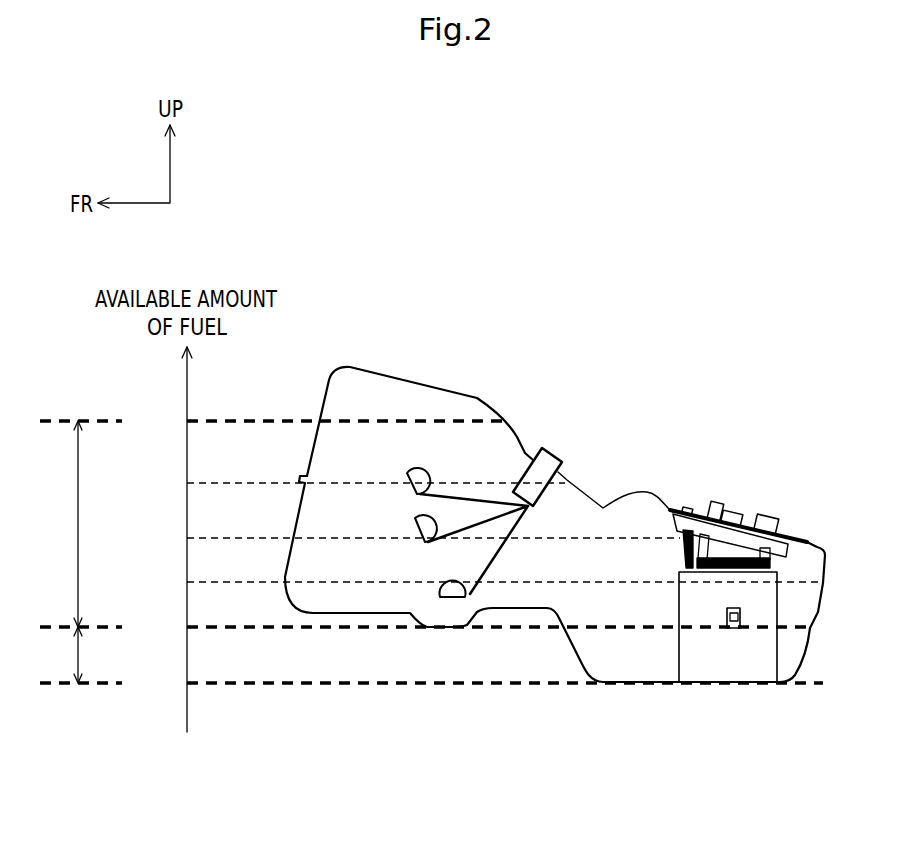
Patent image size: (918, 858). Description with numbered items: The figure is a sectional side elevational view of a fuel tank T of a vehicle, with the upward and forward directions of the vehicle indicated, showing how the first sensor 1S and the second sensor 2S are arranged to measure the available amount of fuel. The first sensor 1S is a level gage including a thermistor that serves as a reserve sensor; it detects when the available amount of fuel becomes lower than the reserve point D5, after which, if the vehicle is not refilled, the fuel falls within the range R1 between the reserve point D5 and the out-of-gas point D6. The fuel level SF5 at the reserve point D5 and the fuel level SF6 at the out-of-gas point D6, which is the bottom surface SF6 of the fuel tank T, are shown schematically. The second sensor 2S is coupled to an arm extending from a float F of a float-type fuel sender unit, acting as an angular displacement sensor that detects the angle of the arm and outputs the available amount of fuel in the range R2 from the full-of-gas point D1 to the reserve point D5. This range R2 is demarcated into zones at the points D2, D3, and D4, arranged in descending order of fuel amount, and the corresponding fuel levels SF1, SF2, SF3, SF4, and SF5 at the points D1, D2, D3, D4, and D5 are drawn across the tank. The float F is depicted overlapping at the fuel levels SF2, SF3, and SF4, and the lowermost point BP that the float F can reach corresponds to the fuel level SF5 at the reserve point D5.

The fuel tank T is at (420, 355).
The float F is at (455, 458).
The second sensor 2S is at (540, 480).
The first sensor 1S is at (734, 629).
The fuel level SF1 is at (348, 420).
The fuel level SF2 is at (338, 482).
The fuel level SF3 is at (327, 537).
The fuel level SF4 is at (320, 580).
The fuel level SF5 is at (595, 627).
The bottom surface SF6 is at (633, 685).
The lowermost point BP is at (452, 640).
The full-of-gas point D1 is at (271, 421).
The zone demarcating point D2 is at (358, 483).
The zone demarcating point D3 is at (416, 539).
The zone demarcating point D4 is at (486, 581).
The reserve point D5 is at (425, 628).
The out-of-gas point D6 is at (431, 686).
The range R1 is at (63, 655).
The range R2 is at (63, 524).